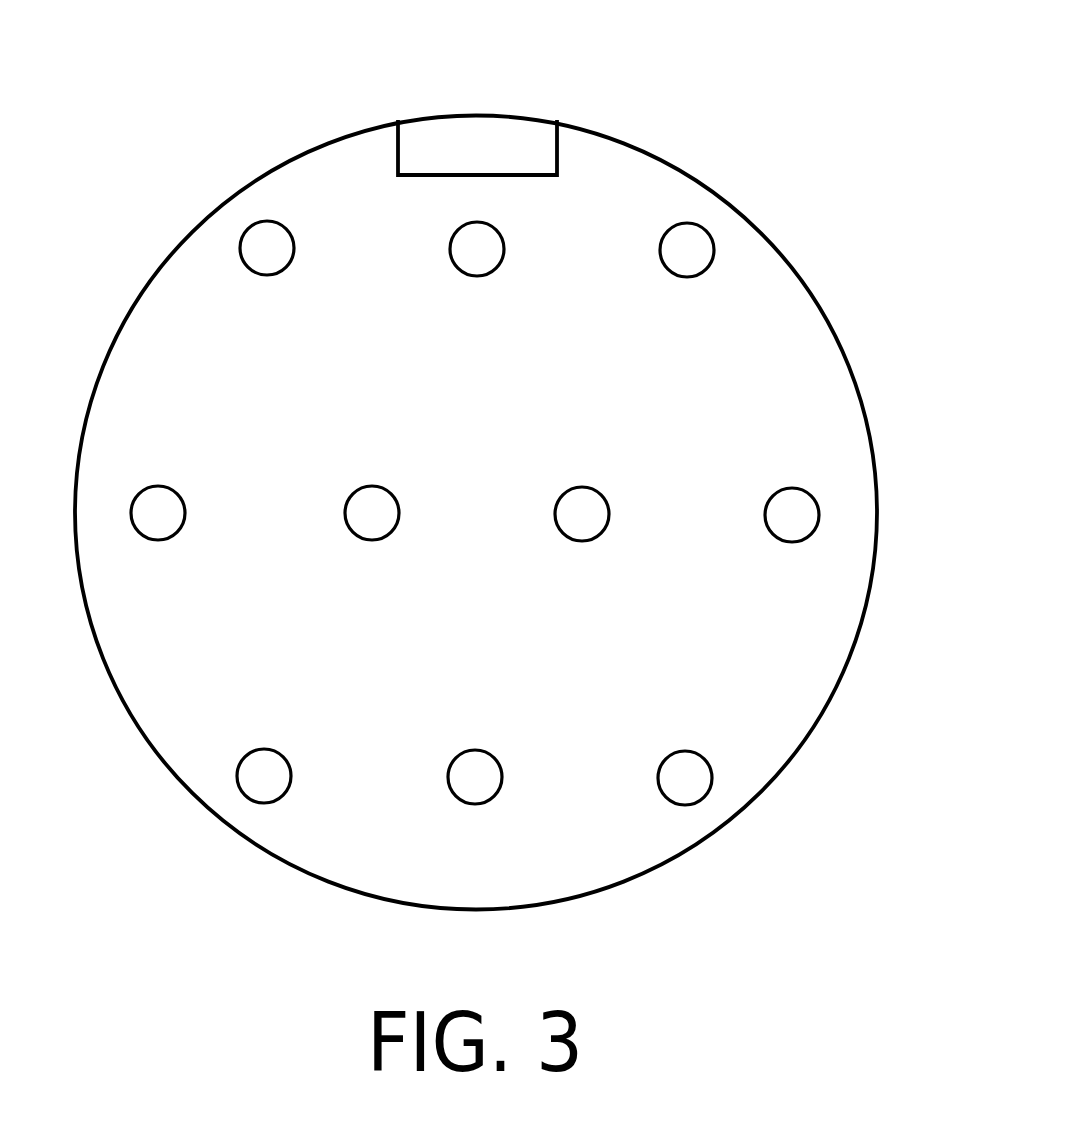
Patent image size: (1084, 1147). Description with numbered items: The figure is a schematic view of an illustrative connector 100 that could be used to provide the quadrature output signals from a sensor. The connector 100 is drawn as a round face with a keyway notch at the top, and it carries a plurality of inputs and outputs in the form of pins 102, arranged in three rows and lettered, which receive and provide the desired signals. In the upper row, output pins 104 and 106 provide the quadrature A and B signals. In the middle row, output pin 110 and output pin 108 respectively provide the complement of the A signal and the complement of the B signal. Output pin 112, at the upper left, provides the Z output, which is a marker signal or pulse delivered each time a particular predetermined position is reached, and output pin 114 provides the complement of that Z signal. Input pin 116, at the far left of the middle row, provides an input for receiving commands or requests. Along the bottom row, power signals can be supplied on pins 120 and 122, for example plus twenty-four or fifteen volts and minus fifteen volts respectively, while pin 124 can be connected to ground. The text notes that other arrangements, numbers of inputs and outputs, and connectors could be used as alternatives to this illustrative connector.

The connector 100 is at (827, 313).
The pins 102 is at (603, 172).
The output pin 104 is at (458, 262).
The output pin 106 is at (693, 223).
The output pin 108 is at (792, 488).
The output pin 110 is at (582, 487).
The output pin 112 is at (260, 222).
The output pin 114 is at (372, 486).
The input pin 116 is at (160, 486).
The pin 120 is at (694, 802).
The pin 122 is at (475, 750).
The pin 124 is at (258, 802).